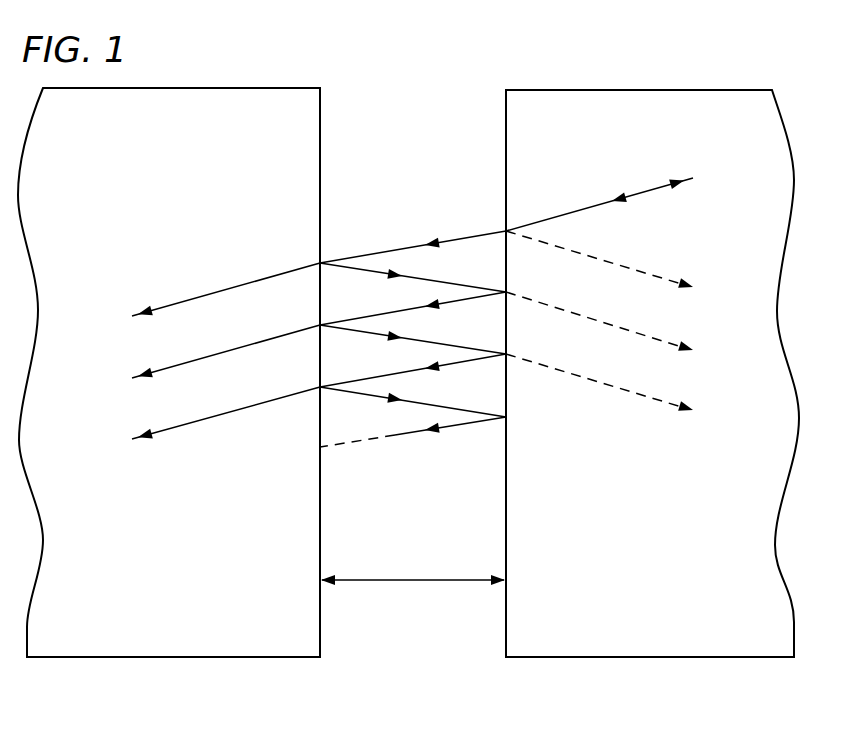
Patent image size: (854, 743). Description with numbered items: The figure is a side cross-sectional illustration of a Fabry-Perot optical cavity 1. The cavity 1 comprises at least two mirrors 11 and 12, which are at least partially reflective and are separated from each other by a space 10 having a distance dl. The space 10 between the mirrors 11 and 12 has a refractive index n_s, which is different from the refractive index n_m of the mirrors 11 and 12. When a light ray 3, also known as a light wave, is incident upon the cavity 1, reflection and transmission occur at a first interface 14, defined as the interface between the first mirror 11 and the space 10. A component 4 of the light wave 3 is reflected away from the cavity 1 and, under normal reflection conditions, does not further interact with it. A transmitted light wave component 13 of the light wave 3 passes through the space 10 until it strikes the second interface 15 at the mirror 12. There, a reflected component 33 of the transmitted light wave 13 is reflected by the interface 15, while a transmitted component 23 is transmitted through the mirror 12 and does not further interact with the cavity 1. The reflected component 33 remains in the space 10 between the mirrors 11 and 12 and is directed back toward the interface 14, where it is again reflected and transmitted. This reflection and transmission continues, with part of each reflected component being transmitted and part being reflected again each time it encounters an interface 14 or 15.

The Fabry-Perot optical cavity 1 is at (210, 205).
The light ray 3 is at (650, 190).
The reflected component 4 is at (642, 270).
The space 10 is at (423, 92).
The first mirror 11 is at (614, 73).
The second mirror 12 is at (228, 77).
The transmitted light wave component 13 is at (385, 250).
The first interface 14 is at (506, 156).
The second interface 15 is at (320, 157).
The transmitted component 23 is at (187, 299).
The reflected component 33 is at (490, 290).